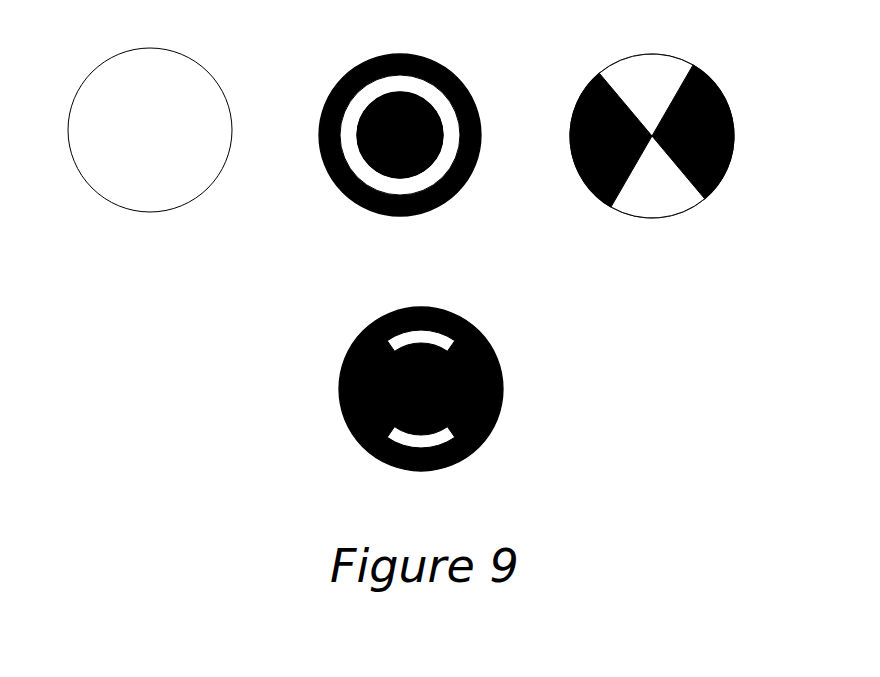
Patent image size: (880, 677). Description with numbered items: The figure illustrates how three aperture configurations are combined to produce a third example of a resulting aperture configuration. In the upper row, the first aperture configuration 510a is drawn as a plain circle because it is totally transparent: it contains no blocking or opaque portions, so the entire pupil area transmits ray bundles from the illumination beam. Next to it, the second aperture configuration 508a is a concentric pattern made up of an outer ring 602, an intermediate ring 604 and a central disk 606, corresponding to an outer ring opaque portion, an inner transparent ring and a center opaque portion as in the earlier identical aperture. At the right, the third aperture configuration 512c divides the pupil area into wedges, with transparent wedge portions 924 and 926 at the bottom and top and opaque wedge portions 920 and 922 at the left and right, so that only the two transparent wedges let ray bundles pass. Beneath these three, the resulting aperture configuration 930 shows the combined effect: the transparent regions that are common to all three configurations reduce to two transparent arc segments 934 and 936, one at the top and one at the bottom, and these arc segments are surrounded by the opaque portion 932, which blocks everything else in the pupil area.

The first aperture configuration 510a is at (84, 70).
The second aperture configuration 508a is at (333, 78).
The outer ring of marker 602 is at (383, 216).
The intermediate white ring of marker 604 is at (348, 170).
The central disk of marker 606 is at (414, 143).
The third aperture configuration 512c is at (580, 78).
The opaque wedge portion 920 is at (575, 163).
The opaque wedge portion 922 is at (728, 169).
The transparent wedge portion 924 is at (657, 197).
The transparent wedge portion 926 is at (647, 67).
The resulting aperture configuration 930 is at (333, 378).
The opaque portion 932 is at (500, 413).
The transparent arc segment 934 is at (445, 345).
The transparent arc segment 936 is at (397, 435).